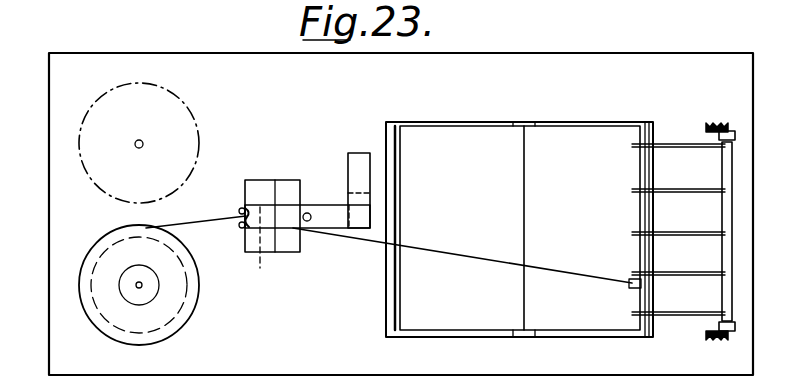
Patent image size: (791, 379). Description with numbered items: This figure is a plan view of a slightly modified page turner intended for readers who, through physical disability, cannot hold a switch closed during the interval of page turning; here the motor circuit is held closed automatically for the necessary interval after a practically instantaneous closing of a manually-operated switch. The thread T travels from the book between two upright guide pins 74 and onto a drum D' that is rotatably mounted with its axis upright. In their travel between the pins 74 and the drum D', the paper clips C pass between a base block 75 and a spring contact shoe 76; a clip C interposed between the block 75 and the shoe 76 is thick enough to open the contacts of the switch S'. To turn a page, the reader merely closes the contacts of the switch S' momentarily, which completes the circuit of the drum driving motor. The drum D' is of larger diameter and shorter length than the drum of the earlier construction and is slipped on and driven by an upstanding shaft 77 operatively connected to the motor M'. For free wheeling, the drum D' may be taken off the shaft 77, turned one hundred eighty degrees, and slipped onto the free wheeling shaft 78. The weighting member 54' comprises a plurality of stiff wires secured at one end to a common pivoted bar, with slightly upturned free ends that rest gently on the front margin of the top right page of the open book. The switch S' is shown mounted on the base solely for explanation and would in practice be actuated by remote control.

The free wheeling shaft 78 is at (133, 143).
The drum D' is at (128, 282).
The motor M' is at (83, 285).
The upstanding shaft 77 is at (139, 285).
The paper clips C is at (630, 288).
The base block 75 is at (268, 245).
The spring contact shoe 76 is at (260, 208).
The switch S' is at (343, 190).
The upright guide pins 74 is at (242, 209).
The thread T is at (458, 253).
The weighting member 54' is at (663, 231).